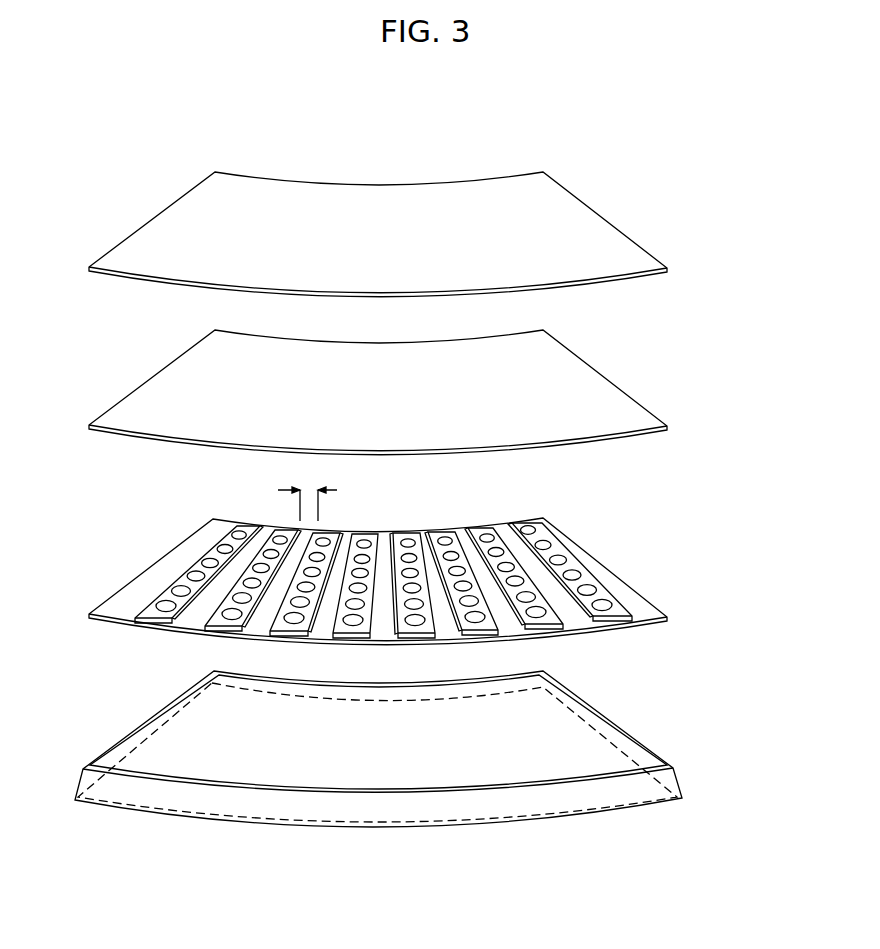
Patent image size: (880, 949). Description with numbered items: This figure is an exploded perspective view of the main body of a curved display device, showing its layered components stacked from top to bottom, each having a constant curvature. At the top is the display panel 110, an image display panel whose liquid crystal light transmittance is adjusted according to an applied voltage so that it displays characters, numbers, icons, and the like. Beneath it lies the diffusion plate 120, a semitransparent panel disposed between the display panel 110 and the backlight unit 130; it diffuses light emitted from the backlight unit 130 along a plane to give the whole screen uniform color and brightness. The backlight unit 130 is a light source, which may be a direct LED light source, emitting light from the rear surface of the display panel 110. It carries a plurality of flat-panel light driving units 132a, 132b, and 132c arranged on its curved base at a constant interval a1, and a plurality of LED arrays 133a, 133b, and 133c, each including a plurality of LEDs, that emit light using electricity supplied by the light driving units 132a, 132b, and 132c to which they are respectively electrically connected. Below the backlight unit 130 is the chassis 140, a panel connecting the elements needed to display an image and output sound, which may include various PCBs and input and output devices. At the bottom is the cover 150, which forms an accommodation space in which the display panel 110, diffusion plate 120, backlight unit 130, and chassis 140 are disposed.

The display panel 110 is at (612, 233).
The diffusion plate 120 is at (615, 405).
The backlight unit 130 is at (415, 551).
The light driving unit 132a is at (522, 527).
The light driving unit 132b is at (480, 530).
The light driving unit 132c is at (438, 532).
The LED array 133a is at (534, 529).
The LED array 133b is at (549, 543).
The LED array 133c is at (565, 559).
The constant interval a1 is at (307, 493).
The chassis 140 is at (590, 725).
The cover 150 is at (432, 749).